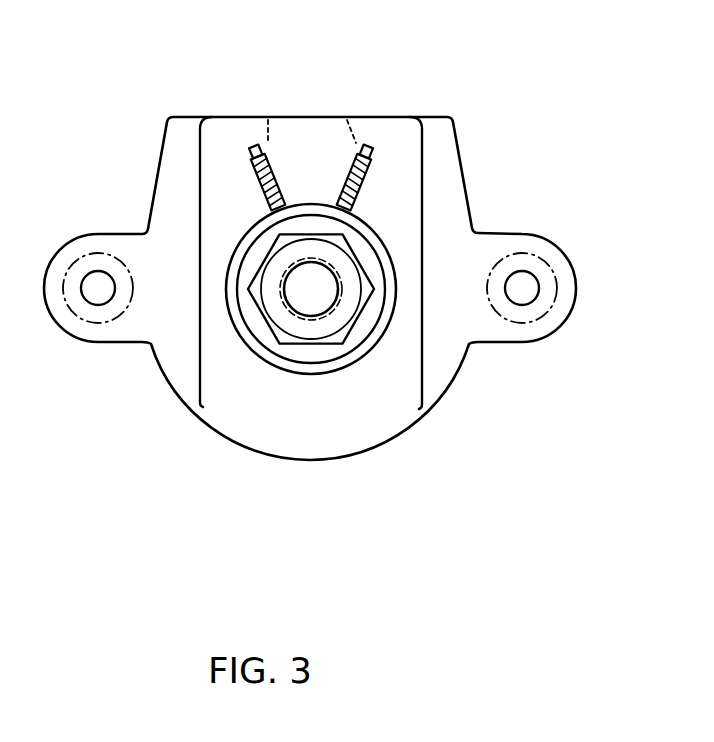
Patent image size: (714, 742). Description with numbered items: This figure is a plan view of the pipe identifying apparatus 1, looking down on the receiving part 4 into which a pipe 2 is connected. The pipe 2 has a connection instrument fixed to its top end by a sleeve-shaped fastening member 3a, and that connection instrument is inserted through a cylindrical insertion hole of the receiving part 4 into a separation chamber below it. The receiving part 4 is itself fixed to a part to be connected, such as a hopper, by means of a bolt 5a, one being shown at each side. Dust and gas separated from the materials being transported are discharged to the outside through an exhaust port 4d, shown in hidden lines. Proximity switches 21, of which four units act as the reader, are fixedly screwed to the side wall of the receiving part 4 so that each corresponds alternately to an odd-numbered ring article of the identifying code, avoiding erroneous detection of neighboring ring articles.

The pipe identifying apparatus 1 is at (143, 151).
The pipe 2 is at (290, 310).
The fastening member 3a is at (357, 268).
The receiving part 4 is at (338, 370).
The exhaust port 4d is at (342, 118).
The bolt 5a is at (73, 268).
The proximity switch 21 is at (258, 192).